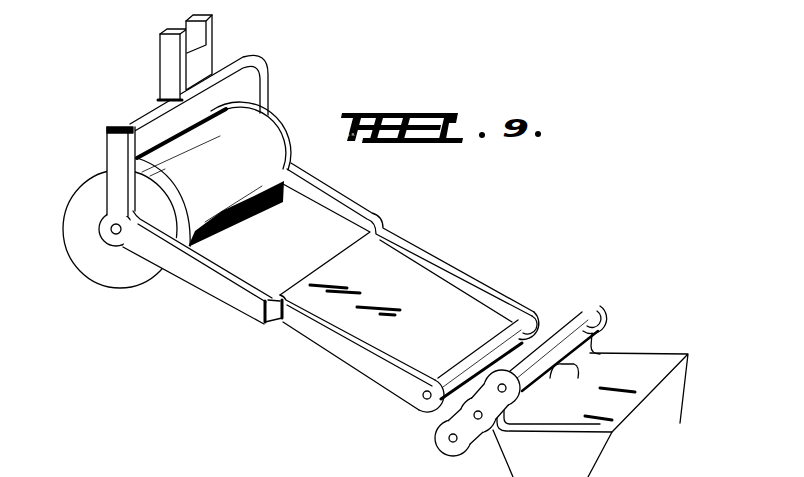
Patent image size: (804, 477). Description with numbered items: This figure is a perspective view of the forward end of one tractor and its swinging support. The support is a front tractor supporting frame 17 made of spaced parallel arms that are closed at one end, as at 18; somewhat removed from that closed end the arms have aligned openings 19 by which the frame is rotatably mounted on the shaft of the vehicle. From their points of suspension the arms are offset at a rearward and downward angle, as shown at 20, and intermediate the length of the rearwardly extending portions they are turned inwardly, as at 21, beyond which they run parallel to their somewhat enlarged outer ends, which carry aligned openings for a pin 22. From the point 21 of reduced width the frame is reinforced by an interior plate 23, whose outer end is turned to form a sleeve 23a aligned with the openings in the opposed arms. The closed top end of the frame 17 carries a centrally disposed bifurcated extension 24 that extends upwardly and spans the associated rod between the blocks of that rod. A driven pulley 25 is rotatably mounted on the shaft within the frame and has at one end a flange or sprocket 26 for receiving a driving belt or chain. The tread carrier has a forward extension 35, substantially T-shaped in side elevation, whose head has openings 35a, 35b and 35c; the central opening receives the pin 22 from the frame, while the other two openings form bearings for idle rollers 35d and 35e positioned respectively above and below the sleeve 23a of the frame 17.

The front tractor supporting frame 17 is at (108, 153).
The closed end 18 is at (126, 120).
The aligned openings 19 is at (109, 232).
The offset portion 20 is at (166, 273).
The inward turn 21 is at (277, 320).
The pin 22 is at (421, 396).
The interior plate 23 is at (305, 278).
The sleeve 23a is at (460, 355).
The bifurcated extension 24 is at (214, 31).
The driven pulley 25 is at (234, 149).
The flange or sprocket 26 is at (275, 119).
The forward extension 35 is at (492, 431).
The opening 35a is at (473, 415).
The opening 35b is at (521, 389).
The opening 35c is at (448, 440).
The idle roller 35d is at (563, 323).
The idle roller 35e is at (537, 386).